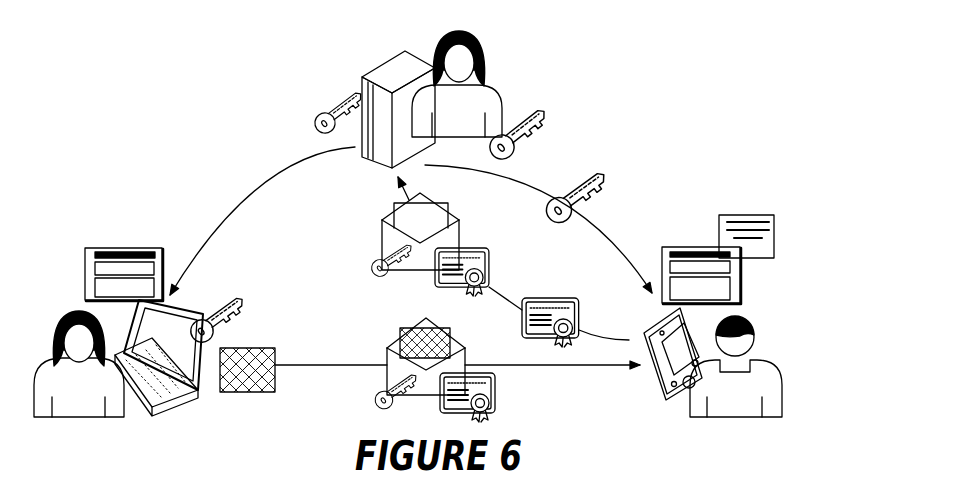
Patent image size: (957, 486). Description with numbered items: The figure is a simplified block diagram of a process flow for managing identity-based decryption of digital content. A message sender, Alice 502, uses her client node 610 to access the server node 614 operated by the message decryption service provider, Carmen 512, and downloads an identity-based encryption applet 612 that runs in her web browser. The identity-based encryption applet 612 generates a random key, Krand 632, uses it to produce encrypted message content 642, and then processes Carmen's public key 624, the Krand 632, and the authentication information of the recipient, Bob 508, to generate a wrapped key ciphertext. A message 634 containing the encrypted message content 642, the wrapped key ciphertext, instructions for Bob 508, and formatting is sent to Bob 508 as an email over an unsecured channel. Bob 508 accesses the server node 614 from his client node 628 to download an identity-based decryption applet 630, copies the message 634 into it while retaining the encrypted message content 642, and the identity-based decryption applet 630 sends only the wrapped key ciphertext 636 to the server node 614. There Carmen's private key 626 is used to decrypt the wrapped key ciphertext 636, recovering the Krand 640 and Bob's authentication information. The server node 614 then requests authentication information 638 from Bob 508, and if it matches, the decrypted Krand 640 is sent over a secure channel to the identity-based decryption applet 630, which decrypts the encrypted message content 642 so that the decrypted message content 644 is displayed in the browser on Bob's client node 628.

The message sender (Alice) 502 is at (60, 418).
The message recipient (Bob) 508 is at (712, 418).
The message decryption service provider (Carmen) 512 is at (498, 86).
The client node 610 is at (168, 412).
The identity-based encryption applet 612 is at (117, 248).
The server node 614 is at (360, 75).
The Carmen's public key 624 is at (312, 134).
The Carmen's private key 626 is at (530, 132).
The client node 628 is at (650, 381).
The identity-based decryption applet 630 is at (688, 247).
The random key (Krand) 632 is at (225, 321).
The message 634 is at (397, 345).
The wrapped key ciphertext 636 is at (388, 215).
The authentication information 638 is at (542, 298).
The decrypted Krand 640 is at (588, 198).
The encrypted message content 642 is at (435, 337).
The decrypted message content 644 is at (755, 215).